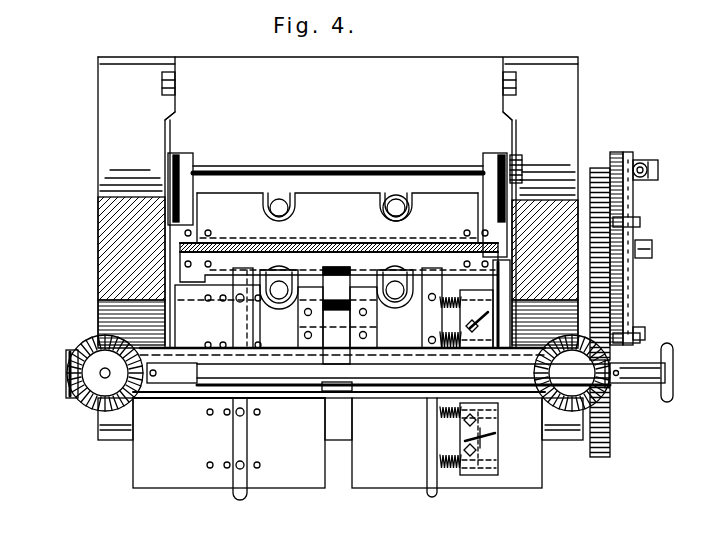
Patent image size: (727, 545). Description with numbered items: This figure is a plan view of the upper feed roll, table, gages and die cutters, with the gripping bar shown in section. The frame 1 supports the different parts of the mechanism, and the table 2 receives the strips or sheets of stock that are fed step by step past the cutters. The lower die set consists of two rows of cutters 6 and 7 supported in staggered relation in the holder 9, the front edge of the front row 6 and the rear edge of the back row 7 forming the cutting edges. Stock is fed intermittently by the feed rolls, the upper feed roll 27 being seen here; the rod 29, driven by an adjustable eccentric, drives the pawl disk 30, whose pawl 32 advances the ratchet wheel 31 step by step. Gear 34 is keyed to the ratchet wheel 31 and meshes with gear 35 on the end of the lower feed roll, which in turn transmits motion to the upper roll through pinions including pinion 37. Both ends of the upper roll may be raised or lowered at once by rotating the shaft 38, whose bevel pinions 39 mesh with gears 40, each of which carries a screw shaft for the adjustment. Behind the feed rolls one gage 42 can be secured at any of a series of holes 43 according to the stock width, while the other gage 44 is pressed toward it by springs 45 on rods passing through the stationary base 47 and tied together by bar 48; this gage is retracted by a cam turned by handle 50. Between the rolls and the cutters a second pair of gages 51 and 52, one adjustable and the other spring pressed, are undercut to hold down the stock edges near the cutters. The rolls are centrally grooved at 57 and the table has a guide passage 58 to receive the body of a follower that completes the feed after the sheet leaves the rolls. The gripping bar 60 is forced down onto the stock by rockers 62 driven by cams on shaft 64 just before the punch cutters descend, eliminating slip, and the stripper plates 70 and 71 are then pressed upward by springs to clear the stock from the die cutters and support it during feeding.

The frame 1 is at (565, 116).
The table 2 is at (292, 458).
The front row of die cutters 6 is at (441, 240).
The back row of die cutters 7 is at (227, 254).
The holder 9 is at (336, 218).
The feed roll 27 is at (183, 399).
The rod 29 is at (650, 163).
The pawl disk 30 is at (631, 290).
The ratchet wheel 31 is at (617, 165).
The pawl 32 is at (638, 219).
The gear 34 is at (600, 168).
The gear 35 is at (613, 441).
The pinion 37 is at (309, 361).
The shaft 38 is at (669, 363).
The bevel pinion 39 is at (136, 392).
The gear 40 is at (88, 396).
The gage 42 is at (240, 501).
The holes 43 is at (207, 467).
The gage 44 is at (430, 490).
The spring 45 is at (447, 470).
The stationary base 47 is at (478, 474).
The bar 48 is at (497, 462).
The handle 50 is at (490, 320).
The front gage 51 is at (240, 322).
The front gage 52 is at (428, 322).
The groove 57 is at (338, 386).
The guide passage 58 is at (338, 412).
The gripping bar 60 is at (241, 243).
The rocker 62 is at (177, 178).
The shaft 64 is at (342, 168).
The stripper plate 70 is at (338, 230).
The stripper plate 71 is at (175, 262).